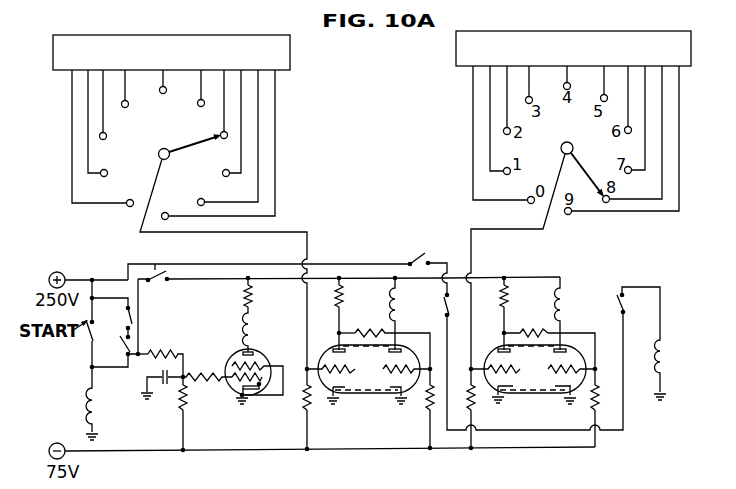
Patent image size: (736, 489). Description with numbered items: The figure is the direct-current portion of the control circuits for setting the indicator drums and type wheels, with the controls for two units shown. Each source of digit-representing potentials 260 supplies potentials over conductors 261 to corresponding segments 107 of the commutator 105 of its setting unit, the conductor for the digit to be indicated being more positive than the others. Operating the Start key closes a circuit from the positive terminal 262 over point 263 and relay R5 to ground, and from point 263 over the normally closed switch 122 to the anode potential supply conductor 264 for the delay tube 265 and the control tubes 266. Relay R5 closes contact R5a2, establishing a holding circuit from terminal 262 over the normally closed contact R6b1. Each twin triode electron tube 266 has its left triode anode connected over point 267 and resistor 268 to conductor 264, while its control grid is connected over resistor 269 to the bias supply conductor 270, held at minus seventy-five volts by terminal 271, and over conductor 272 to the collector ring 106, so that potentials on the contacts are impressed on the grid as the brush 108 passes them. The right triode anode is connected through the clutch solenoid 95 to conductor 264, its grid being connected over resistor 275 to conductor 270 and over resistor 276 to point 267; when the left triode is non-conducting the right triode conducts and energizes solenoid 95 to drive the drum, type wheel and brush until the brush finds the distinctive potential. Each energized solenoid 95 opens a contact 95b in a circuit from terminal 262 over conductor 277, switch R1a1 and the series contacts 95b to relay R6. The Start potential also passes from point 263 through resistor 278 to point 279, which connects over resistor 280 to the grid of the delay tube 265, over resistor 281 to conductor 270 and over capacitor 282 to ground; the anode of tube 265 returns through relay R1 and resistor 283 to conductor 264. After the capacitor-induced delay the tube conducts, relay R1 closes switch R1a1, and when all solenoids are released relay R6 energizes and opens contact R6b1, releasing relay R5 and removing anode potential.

The source of digit-representing potentials 260 is at (456, 48).
The conductors 261 is at (72, 126).
The commutator 105 is at (146, 153).
The collector ring 106 is at (158, 154).
The segments 107 is at (127, 207).
The brush 108 is at (185, 147).
The conductor 272 is at (290, 232).
The +250-volt terminal 262 is at (51, 275).
The switch 122 is at (150, 263).
The conductor 277 is at (240, 264).
The point 263 is at (91, 367).
The contact R6b1 is at (134, 316).
The contact R5a2 is at (135, 345).
The resistor 278 is at (152, 360).
The point 279 is at (175, 358).
The resistor 280 is at (207, 389).
The resistor 281 is at (186, 405).
The capacitor 282 is at (167, 386).
The relay R5 is at (97, 400).
The terminal 271 is at (54, 444).
The bias supply conductor 270 is at (348, 448).
The resistor 283 is at (253, 294).
The relay R1 is at (253, 327).
The delay tube 265 is at (253, 350).
The resistor 269 is at (303, 400).
The resistor 268 is at (346, 291).
The point 267 is at (338, 333).
The resistor 276 is at (378, 331).
The clutch solenoid 95 is at (397, 303).
The switch R1a1 is at (422, 246).
The contact 95b is at (445, 306).
The anode potential supply conductor 264 is at (487, 278).
The twin triode electron tube 266 is at (393, 393).
The resistor 275 is at (428, 412).
The relay R6 is at (664, 350).